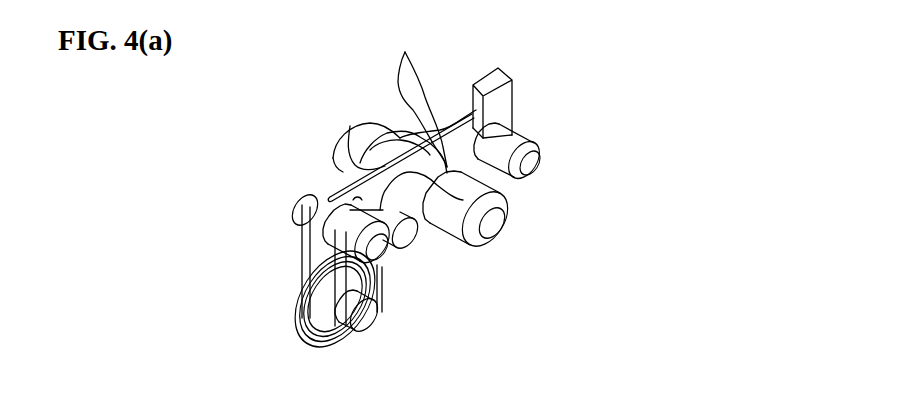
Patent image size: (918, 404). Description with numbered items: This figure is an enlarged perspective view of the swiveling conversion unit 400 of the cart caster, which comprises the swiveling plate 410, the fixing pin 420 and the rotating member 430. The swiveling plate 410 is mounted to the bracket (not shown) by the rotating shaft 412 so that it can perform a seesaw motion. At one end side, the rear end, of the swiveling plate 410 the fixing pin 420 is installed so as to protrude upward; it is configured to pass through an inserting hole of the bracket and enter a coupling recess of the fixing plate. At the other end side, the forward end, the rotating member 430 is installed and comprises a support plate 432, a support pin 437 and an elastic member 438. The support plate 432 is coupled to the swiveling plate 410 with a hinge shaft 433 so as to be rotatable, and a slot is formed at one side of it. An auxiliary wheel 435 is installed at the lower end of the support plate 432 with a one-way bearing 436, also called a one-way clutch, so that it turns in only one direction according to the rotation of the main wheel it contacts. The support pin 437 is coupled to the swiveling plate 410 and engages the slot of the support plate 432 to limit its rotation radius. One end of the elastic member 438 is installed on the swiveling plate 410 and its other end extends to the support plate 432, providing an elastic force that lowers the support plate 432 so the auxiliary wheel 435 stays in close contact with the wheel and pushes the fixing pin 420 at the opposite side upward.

The swiveling conversion unit 400 is at (276, 81).
The swiveling plate 410 is at (414, 94).
The rotating shaft 412 is at (495, 225).
The fixing pin 420 is at (512, 95).
The rotating member 430 is at (279, 306).
The support plate 432 is at (302, 260).
The hinge shaft 433 is at (382, 250).
The auxiliary wheel 435 is at (307, 343).
The one-way bearing 436 is at (366, 320).
The support pin 437 is at (407, 232).
The elastic member 438 is at (340, 157).